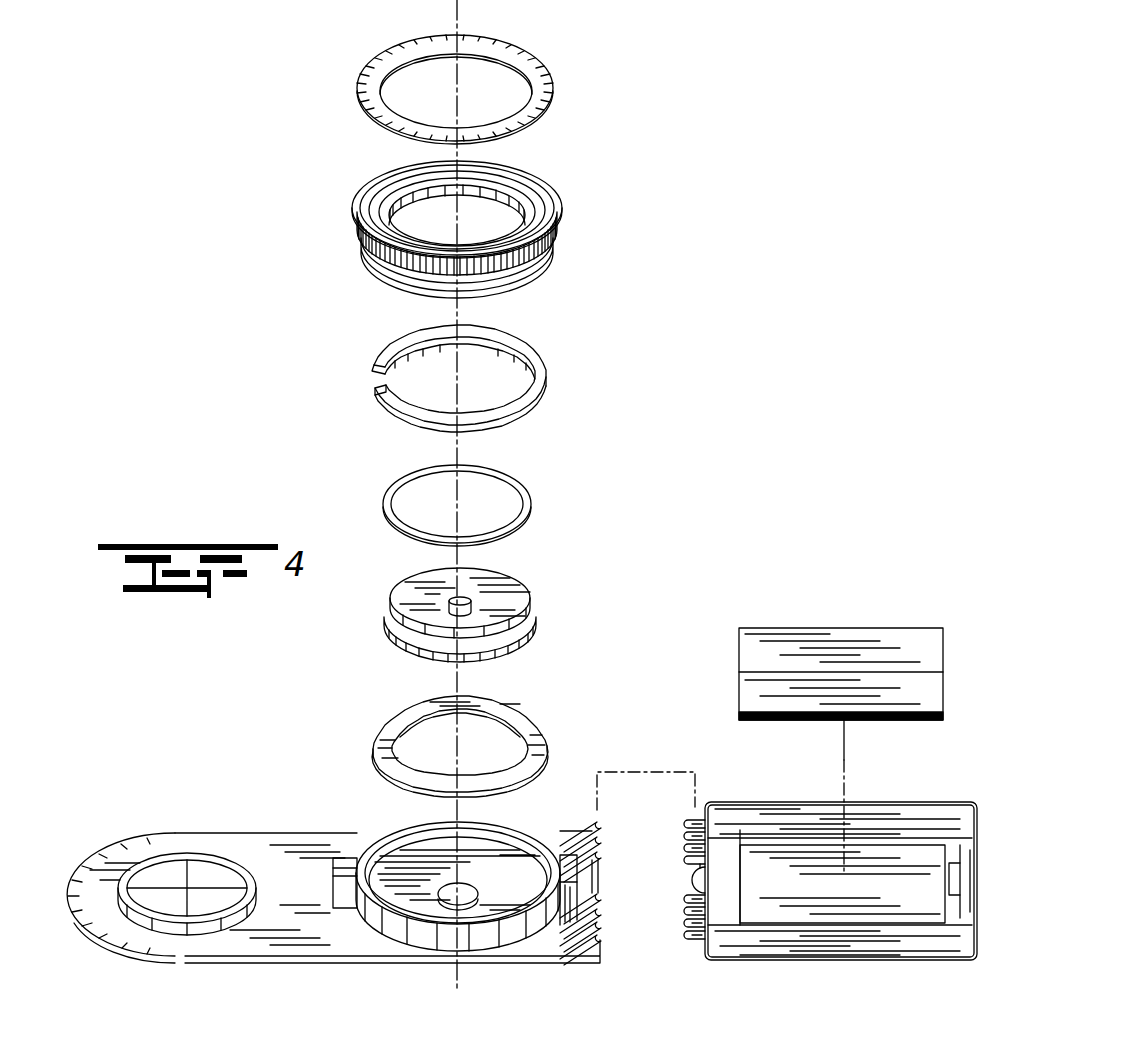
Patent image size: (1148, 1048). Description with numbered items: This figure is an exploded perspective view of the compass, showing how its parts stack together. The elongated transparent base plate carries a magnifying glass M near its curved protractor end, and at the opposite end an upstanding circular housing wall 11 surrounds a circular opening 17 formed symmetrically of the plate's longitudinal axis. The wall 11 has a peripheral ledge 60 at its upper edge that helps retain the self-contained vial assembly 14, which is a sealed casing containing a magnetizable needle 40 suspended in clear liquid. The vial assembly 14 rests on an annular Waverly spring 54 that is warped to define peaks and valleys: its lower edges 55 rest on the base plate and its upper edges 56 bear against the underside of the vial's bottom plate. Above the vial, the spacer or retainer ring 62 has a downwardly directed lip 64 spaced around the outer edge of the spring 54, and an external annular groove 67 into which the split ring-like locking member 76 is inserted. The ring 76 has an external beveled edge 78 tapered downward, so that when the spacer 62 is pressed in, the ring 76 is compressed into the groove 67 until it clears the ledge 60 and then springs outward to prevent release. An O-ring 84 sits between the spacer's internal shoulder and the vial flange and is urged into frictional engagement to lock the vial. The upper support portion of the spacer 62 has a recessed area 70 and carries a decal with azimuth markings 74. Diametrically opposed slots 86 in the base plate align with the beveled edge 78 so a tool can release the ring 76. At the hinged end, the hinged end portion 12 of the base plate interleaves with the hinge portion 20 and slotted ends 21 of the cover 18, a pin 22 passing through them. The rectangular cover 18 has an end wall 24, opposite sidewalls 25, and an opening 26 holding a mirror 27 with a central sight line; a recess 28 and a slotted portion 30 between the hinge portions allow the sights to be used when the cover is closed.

The azimuth markings decal 74 is at (373, 73).
The recessed area 70 is at (532, 207).
The spacer or retainer ring 62 is at (352, 226).
The external annular groove 67 is at (550, 266).
The downwardly directed lip 64 is at (522, 288).
The external beveled edge 78 is at (372, 370).
The ring-like locking member 76 is at (374, 400).
The O-ring 84 is at (533, 505).
The needle 40 is at (495, 612).
The vial assembly 14 is at (538, 612).
The upper edges 56 is at (456, 697).
The lower edges 55 is at (412, 717).
The annular spring 54 is at (374, 748).
The magnifying glass M is at (175, 855).
The slots 86 is at (386, 858).
The housing wall 11 is at (417, 830).
The circular opening 17 is at (468, 905).
The peripheral ledge 60 is at (392, 922).
The hinged end portion 12 is at (598, 948).
The pin 22 is at (599, 925).
The hinge portion 20 is at (686, 830).
The slotted ends 21 is at (697, 870).
The slotted portion 30 is at (700, 889).
The cover 18 is at (790, 815).
The sidewalls 25 is at (875, 805).
The end wall 24 is at (977, 815).
The recess 28 is at (962, 872).
The opening 26 is at (745, 910).
The mirror 27 is at (880, 628).